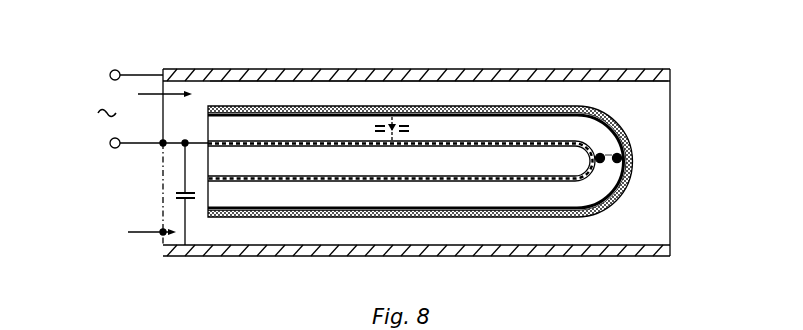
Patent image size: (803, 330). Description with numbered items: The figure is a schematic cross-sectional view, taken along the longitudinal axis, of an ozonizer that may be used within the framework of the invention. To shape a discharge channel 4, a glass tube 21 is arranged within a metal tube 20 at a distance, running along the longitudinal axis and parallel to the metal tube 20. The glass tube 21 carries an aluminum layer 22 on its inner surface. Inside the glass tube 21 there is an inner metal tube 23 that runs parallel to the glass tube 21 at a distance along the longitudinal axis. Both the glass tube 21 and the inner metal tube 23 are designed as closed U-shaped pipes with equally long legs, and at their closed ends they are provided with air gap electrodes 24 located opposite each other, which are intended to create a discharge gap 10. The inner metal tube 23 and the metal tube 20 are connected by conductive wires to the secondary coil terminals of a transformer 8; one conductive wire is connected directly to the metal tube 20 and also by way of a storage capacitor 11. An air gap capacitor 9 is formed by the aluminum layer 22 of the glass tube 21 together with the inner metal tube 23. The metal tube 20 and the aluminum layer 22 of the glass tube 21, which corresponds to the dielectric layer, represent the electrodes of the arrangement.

The transformer 8 is at (107, 137).
The air gap capacitor 9 is at (396, 117).
The discharge gap 10 is at (608, 147).
The storage capacitor 11 is at (182, 198).
The discharge channel 4 is at (543, 97).
The metal tube 20 is at (207, 70).
The glass tube 21 is at (262, 107).
The aluminum layer 22 is at (317, 113).
The inner metal tube 23 is at (472, 141).
The air gap electrodes 24 is at (599, 153).